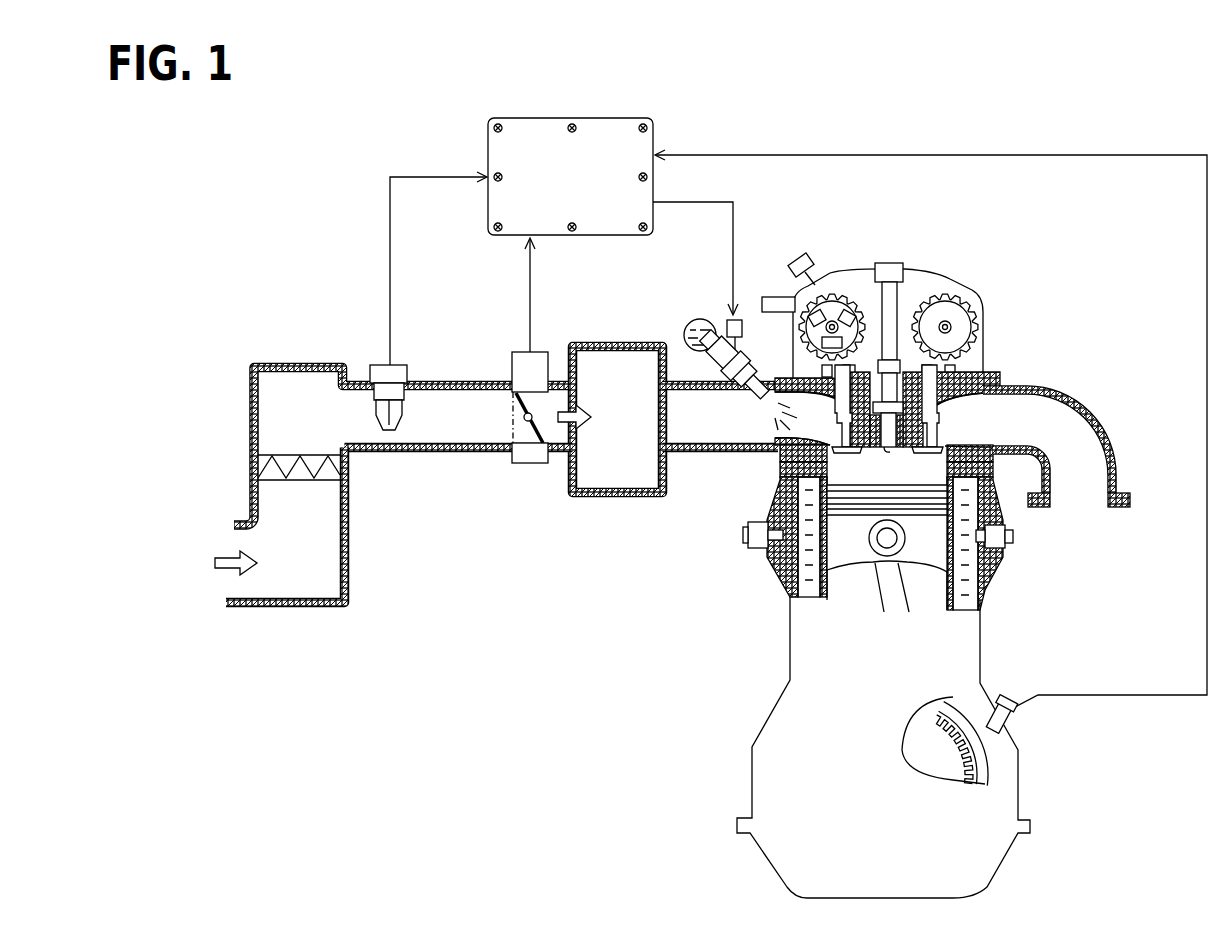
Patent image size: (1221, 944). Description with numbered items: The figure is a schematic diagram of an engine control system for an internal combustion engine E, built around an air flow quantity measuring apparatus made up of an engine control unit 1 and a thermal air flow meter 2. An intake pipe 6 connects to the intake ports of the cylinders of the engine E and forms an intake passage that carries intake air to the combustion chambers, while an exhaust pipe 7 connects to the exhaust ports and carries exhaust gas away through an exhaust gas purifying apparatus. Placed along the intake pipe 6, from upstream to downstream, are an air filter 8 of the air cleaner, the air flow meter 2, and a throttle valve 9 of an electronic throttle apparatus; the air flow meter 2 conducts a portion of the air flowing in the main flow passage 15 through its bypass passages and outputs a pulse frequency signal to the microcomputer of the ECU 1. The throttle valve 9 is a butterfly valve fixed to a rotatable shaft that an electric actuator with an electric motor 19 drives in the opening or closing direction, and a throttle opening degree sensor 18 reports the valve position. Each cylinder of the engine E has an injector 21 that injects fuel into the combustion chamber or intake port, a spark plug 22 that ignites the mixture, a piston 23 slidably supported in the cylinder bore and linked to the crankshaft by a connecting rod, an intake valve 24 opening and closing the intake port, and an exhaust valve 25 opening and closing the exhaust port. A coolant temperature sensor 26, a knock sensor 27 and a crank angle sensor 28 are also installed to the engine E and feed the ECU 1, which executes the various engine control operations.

The engine control unit (ECU) 1 is at (578, 118).
The thermal air flow meter 2 is at (383, 409).
The intake pipe 6 is at (479, 454).
The exhaust pipe 7 is at (1107, 440).
The air filter 8 is at (262, 470).
The throttle valve 9 is at (513, 400).
The main flow passage 15 is at (398, 440).
The throttle opening degree sensor 18 is at (548, 352).
The electric motor 19 is at (530, 465).
The injector 21 is at (700, 372).
The spark plug 22 is at (983, 375).
The piston 23 is at (925, 598).
The intake valve 24 is at (777, 440).
The exhaust valve 25 is at (925, 420).
The coolant temperature sensor 26 is at (748, 540).
The knock sensor 27 is at (1015, 537).
The crank angle sensor 28 is at (1012, 727).
The internal combustion engine E is at (886, 572).